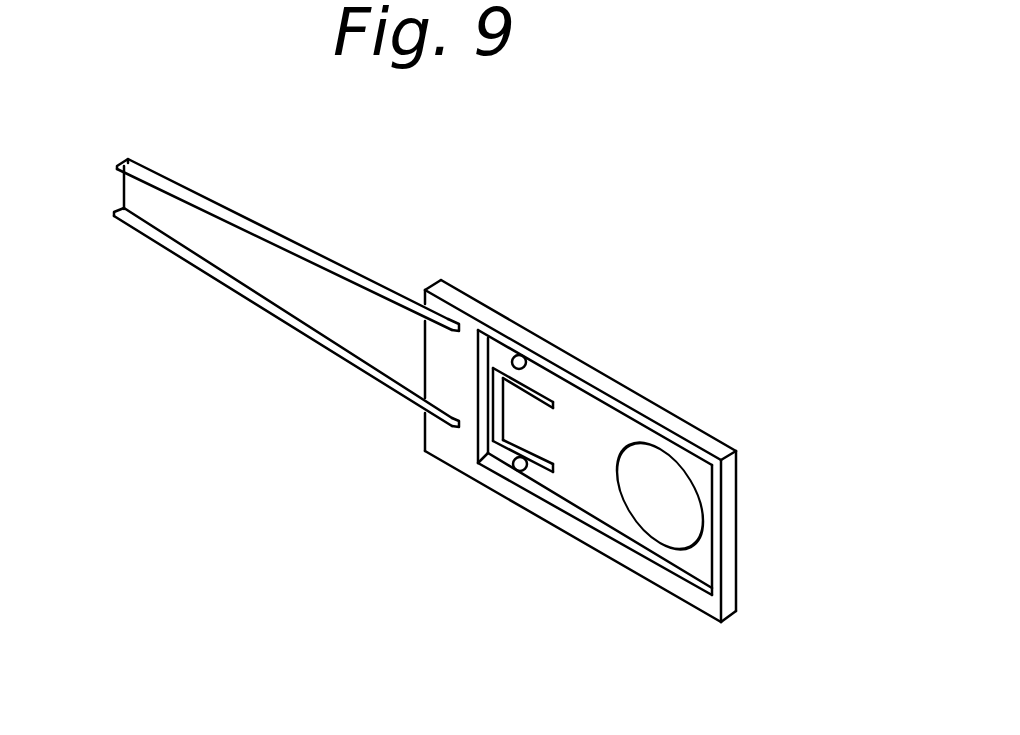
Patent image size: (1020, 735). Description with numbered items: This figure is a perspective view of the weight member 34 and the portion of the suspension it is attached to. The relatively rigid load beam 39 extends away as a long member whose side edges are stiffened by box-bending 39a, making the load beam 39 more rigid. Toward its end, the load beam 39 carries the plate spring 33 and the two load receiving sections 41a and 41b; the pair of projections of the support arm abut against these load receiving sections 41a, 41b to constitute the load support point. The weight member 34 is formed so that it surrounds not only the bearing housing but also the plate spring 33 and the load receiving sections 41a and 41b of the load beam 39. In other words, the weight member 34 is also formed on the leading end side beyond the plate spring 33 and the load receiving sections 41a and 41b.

The load beam 39 is at (305, 282).
The box-bending 39a is at (211, 204).
The weight member 34 is at (469, 300).
The plate spring 33 is at (516, 420).
The load receiving section 41a is at (520, 472).
The load receiving section 41b is at (523, 360).